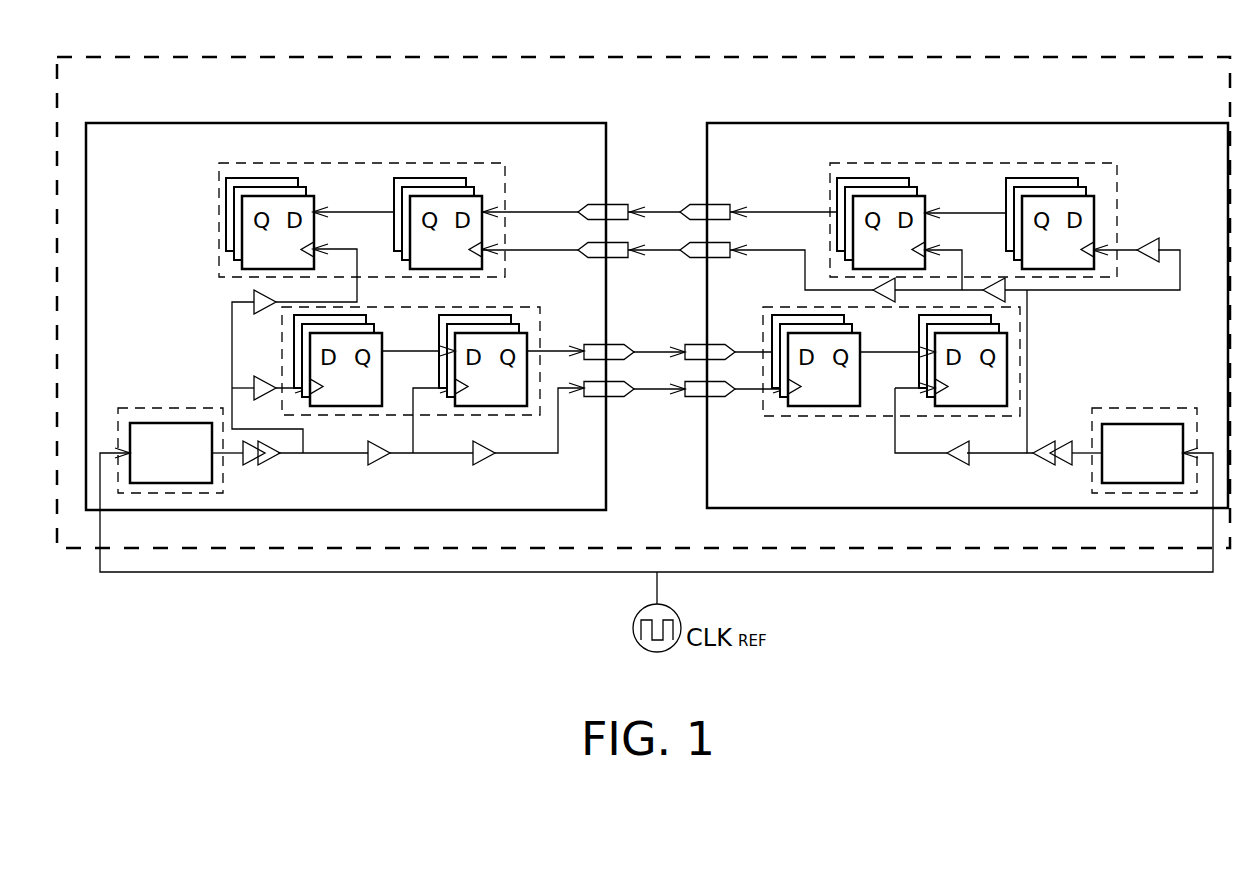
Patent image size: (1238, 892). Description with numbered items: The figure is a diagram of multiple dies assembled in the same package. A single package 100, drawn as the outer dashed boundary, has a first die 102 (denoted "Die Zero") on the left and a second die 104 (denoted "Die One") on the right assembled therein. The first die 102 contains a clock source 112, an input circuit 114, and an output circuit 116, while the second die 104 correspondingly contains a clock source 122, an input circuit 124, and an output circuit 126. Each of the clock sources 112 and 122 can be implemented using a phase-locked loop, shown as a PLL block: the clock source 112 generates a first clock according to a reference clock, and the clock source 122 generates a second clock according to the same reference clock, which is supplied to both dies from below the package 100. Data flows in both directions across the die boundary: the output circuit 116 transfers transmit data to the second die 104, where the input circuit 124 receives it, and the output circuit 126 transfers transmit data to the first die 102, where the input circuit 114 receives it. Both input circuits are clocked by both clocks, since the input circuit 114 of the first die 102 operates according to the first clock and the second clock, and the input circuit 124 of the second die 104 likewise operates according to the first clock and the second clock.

The single package 100 is at (654, 57).
The first die 102 is at (355, 122).
The second die 104 is at (965, 122).
The clock source 112 is at (155, 407).
The input circuit 114 is at (219, 238).
The output circuit 116 is at (516, 307).
The clock source 122 is at (1156, 407).
The input circuit 124 is at (806, 418).
The output circuit 126 is at (1119, 221).